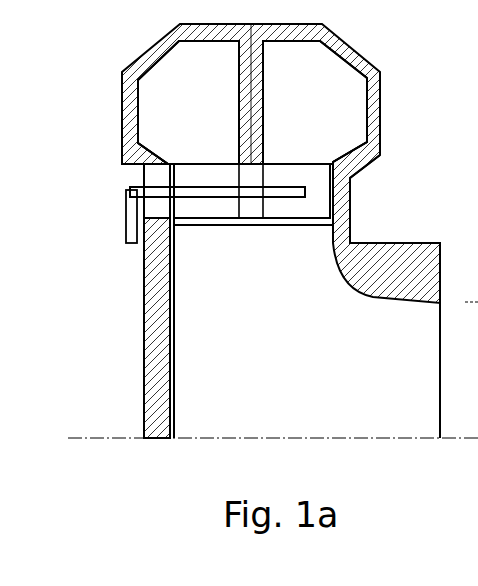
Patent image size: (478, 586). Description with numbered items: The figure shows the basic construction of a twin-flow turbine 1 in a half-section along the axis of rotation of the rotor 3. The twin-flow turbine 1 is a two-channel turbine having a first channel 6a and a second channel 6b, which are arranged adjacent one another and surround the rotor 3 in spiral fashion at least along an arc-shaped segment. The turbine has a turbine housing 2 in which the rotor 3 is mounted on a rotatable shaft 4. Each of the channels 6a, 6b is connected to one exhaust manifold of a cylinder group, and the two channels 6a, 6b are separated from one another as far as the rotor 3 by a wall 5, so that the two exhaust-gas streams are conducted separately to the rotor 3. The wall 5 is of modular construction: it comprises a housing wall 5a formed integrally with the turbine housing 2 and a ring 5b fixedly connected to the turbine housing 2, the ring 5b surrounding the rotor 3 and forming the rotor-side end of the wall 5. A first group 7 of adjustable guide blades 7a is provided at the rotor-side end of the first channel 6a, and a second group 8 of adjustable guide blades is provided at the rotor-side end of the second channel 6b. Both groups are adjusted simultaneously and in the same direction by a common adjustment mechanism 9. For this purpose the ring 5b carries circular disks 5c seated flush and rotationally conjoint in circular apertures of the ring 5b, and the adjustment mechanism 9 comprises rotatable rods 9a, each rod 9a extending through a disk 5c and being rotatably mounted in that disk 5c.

The twin-flow turbine 1 is at (136, 505).
The turbine housing 2 is at (353, 228).
The rotor 3 is at (287, 355).
The rotatable shaft 4 is at (91, 423).
The wall 5 is at (252, 211).
The housing wall 5a is at (265, 80).
The ring 5b is at (241, 229).
The circular disks 5c is at (252, 208).
The first channel 6a is at (222, 64).
The second channel 6b is at (297, 64).
The first group of adjustable guide blades 7 is at (191, 136).
The guide blade 7a is at (192, 178).
The second group of adjustable guide blades 8 is at (283, 134).
The common adjustment mechanism 9 is at (102, 247).
The rotatable rod 9a is at (137, 183).